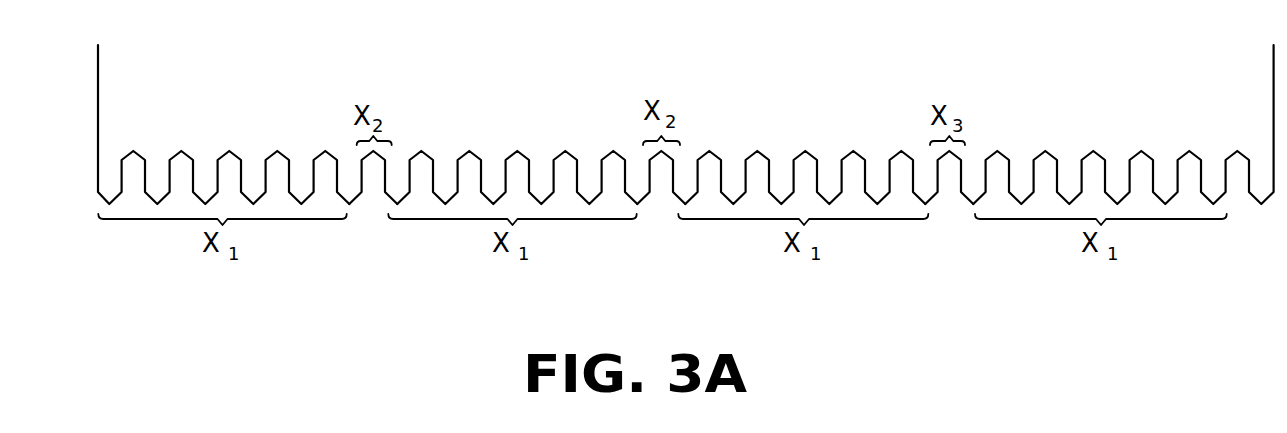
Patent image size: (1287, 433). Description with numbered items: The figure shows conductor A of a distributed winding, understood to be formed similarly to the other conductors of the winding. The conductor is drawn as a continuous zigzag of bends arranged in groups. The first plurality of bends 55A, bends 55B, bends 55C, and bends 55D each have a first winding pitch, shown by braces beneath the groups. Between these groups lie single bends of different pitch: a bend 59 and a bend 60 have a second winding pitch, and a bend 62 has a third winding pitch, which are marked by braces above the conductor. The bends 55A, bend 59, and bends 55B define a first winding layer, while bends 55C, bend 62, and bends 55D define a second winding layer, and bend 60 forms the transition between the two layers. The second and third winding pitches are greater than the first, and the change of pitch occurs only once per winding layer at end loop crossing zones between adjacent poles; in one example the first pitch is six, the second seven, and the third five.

The first plurality of bends 55A is at (223, 118).
The plurality of bends 55B is at (522, 119).
The plurality of bends 55C is at (815, 119).
The plurality of bends 55D is at (1117, 117).
The bend 59 is at (370, 230).
The bend 60 is at (658, 230).
The bend 62 is at (950, 230).